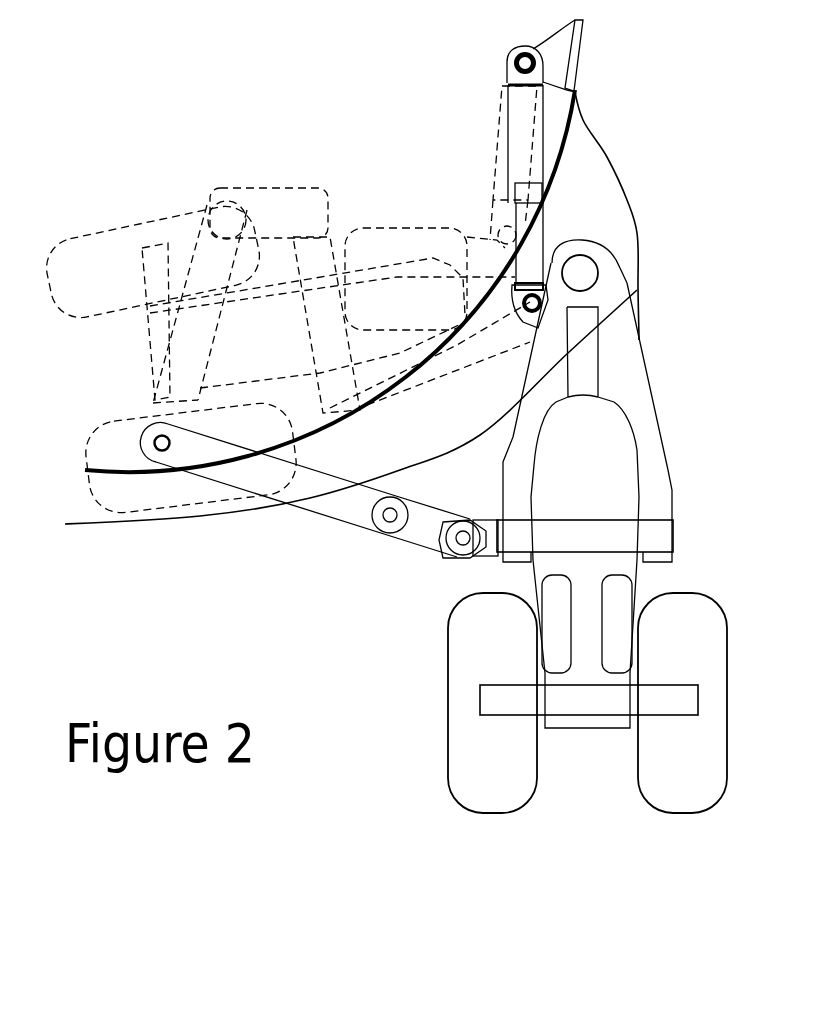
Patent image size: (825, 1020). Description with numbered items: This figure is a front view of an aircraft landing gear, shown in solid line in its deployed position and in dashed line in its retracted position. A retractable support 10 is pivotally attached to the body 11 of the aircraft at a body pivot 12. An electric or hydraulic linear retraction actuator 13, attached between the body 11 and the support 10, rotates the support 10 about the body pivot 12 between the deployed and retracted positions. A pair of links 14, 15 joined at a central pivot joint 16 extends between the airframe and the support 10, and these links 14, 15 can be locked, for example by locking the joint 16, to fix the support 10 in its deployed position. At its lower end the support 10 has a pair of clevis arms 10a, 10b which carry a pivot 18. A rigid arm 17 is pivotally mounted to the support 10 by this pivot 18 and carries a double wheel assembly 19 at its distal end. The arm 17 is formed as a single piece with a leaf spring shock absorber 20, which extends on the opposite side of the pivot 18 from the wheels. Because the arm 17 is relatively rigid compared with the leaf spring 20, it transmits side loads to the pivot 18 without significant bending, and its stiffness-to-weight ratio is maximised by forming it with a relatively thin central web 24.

The retractable support 10 is at (630, 357).
The clevis arm 10a is at (660, 438).
The clevis arm 10b is at (512, 475).
The body 11 is at (577, 165).
The body pivot 12 is at (580, 273).
The linear retraction actuator 13 is at (537, 119).
The link 14 is at (423, 530).
The link 15 is at (272, 495).
The central pivot joint 16 is at (386, 518).
The rigid arm 17 is at (587, 727).
The pivot 18 is at (580, 535).
The double wheel assembly 19 is at (707, 682).
The leaf spring shock absorber 20 is at (588, 338).
The central web 24 is at (585, 612).